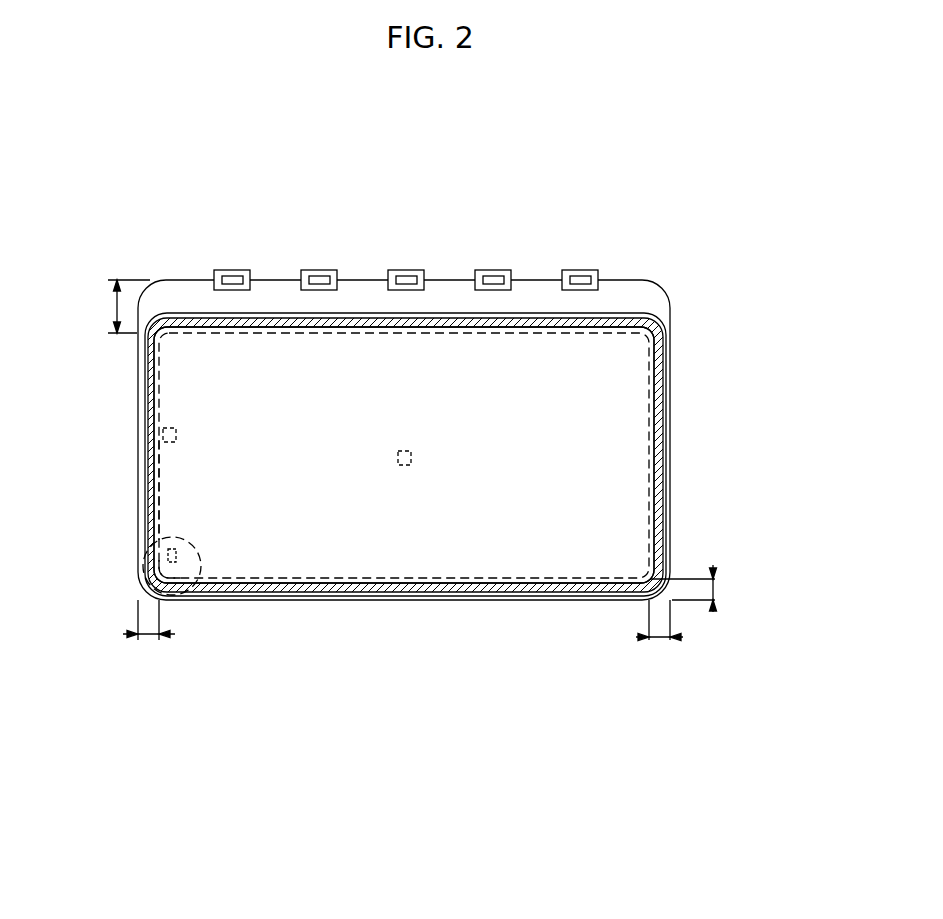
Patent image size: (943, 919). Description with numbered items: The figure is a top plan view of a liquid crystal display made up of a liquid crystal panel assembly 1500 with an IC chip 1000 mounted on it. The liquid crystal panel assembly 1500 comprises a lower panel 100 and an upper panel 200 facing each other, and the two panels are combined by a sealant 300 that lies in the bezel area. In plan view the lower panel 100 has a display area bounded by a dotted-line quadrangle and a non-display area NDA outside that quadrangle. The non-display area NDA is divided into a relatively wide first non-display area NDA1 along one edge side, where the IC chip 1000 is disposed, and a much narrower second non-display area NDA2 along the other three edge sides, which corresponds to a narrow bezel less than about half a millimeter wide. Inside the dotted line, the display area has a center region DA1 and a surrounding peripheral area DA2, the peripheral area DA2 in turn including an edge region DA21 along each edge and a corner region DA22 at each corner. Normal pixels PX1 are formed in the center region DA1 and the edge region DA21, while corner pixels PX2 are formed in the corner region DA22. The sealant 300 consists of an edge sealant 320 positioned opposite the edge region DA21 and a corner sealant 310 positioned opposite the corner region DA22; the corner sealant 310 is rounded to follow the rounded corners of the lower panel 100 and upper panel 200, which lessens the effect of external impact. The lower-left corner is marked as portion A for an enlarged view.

The IC chip 1000 is at (489, 270).
The liquid crystal panel assembly 1500 is at (755, 275).
The lower panel 100 is at (662, 288).
The upper panel 200 is at (661, 317).
The sealant 300 is at (660, 364).
The edge sealant 320 is at (661, 450).
The corner sealant 310 is at (658, 580).
The non-display area NDA is at (190, 292).
The first non-display area NDA1 is at (103, 306).
The second non-display area NDA2 is at (450, 618).
The center region DA1 is at (409, 505).
The peripheral area DA2 is at (327, 768).
The edge region DA21 is at (178, 489).
The corner region DA22 is at (175, 577).
The normal pixel PX1 is at (178, 435).
The corner pixel PX2 is at (170, 549).
The portion A is at (142, 567).